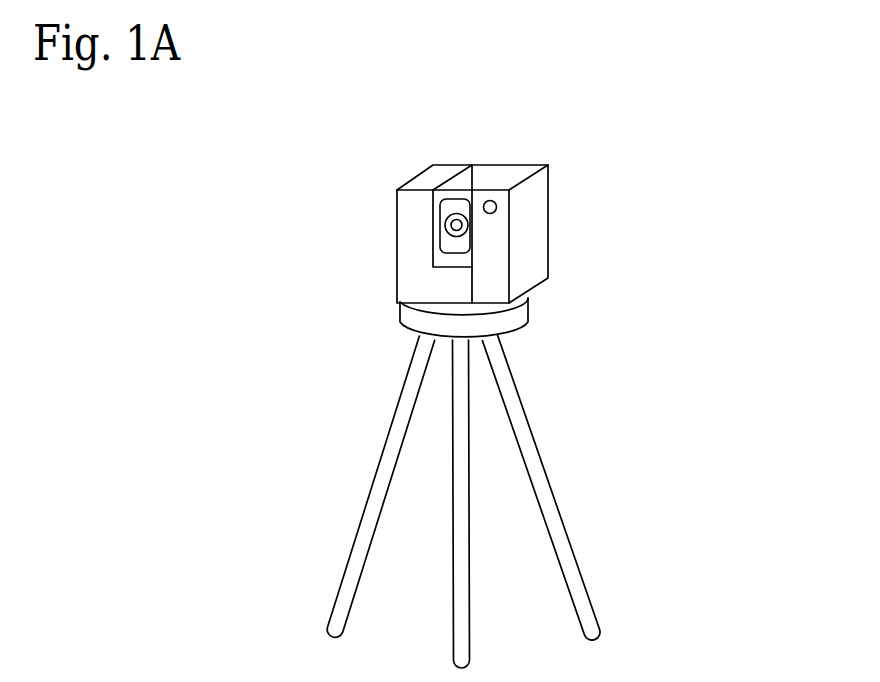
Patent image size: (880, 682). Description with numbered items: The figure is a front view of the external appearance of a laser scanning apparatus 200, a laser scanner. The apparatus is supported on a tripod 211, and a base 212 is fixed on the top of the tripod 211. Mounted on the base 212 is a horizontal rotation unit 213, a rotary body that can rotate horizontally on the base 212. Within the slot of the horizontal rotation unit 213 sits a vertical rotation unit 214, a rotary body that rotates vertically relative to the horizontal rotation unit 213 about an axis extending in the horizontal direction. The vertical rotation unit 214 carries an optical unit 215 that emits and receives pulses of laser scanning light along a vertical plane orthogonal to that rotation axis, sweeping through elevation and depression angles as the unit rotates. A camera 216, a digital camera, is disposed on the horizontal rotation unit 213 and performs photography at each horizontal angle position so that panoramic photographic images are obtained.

The laser scanning apparatus 200 is at (557, 187).
The tripod 211 is at (573, 550).
The base 212 is at (523, 310).
The horizontal rotation unit 213 is at (541, 230).
The vertical rotation unit 214 is at (440, 245).
The optical unit 215 is at (443, 233).
The camera 216 is at (486, 200).